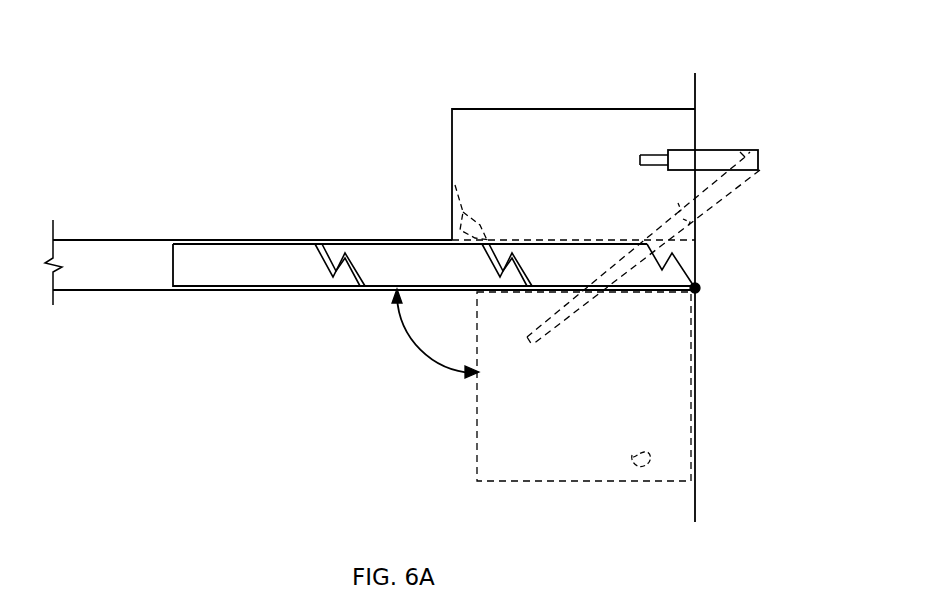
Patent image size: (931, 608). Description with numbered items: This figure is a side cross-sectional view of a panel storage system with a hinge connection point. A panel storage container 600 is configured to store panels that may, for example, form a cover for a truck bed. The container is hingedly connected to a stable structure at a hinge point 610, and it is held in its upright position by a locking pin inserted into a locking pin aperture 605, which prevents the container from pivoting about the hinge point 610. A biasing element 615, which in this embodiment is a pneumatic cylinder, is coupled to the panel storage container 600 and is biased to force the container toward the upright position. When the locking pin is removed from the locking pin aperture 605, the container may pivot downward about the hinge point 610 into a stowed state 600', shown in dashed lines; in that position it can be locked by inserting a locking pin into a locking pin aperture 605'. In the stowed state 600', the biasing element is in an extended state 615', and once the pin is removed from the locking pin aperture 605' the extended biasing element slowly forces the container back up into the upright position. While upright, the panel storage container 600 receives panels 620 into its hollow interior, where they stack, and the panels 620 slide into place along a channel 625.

The panel storage container 600 is at (573, 263).
The stowed state 600' is at (520, 385).
The locking pin aperture 605 is at (438, 180).
The locking pin aperture 605' is at (573, 451).
The hinge point 610 is at (700, 287).
The biasing element 615 is at (699, 110).
The extended state 615' is at (683, 248).
The panels 620 is at (363, 243).
The channel 625 is at (108, 255).